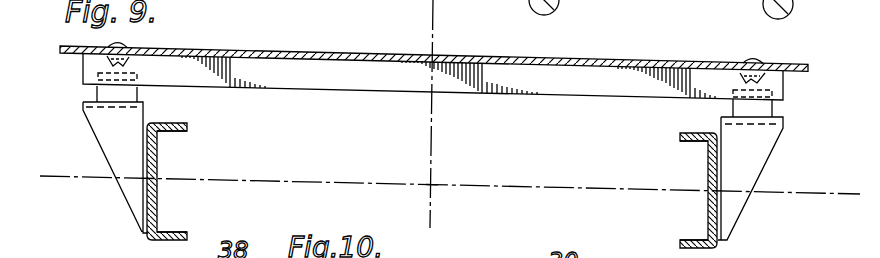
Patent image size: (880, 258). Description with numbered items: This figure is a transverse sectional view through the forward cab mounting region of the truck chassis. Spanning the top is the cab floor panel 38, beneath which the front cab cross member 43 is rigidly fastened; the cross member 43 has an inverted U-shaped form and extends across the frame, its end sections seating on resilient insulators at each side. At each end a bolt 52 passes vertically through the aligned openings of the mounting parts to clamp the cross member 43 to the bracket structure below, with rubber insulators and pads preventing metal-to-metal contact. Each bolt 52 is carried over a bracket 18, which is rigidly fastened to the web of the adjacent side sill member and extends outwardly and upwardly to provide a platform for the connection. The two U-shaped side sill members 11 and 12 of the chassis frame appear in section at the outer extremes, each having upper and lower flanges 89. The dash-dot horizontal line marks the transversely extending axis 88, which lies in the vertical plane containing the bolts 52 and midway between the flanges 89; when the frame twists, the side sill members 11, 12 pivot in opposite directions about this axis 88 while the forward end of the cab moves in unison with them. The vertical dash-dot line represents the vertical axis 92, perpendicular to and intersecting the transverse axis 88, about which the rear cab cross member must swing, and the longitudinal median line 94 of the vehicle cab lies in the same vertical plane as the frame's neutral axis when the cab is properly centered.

The floor panel 38 is at (323, 52).
The front cab cross member 43 is at (577, 92).
The bolt 52 is at (146, 44).
The bracket 18 is at (104, 123).
The side sill member 12 is at (158, 164).
The side sill member 11 is at (708, 205).
The upper and lower flanges 89 is at (180, 124).
The transversely extending axis 88 is at (73, 180).
The vertical axis 92 is at (432, 130).
The longitudinal median line 94 is at (432, 186).